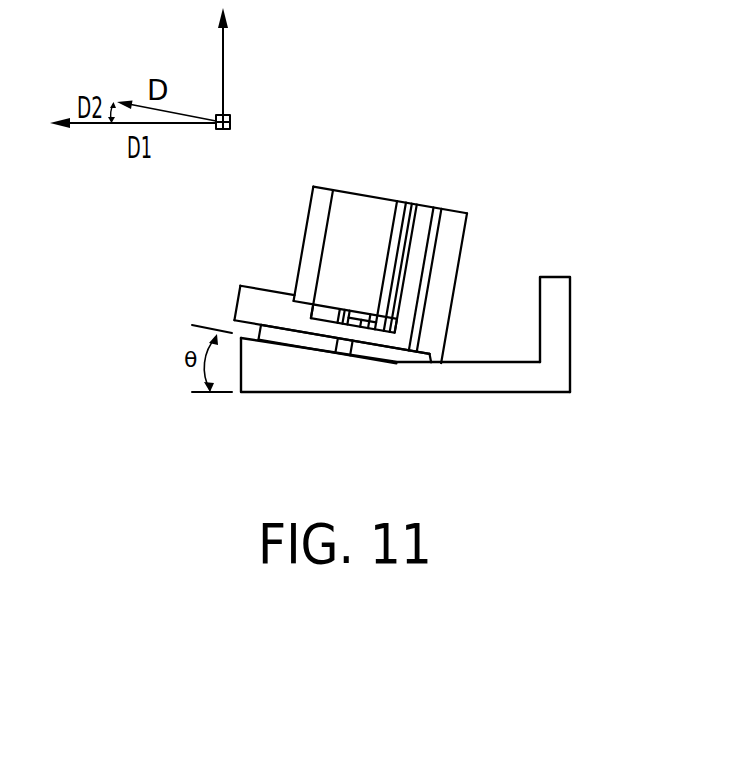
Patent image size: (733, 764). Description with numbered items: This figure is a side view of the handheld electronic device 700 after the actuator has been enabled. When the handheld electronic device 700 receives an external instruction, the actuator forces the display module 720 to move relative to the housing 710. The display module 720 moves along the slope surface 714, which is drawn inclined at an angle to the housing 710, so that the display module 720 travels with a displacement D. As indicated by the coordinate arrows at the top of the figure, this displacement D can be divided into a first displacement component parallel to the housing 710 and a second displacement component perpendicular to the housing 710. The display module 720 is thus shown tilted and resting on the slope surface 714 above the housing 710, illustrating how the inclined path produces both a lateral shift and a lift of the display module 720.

The handheld electronic device 700 is at (642, 443).
The housing 710 is at (555, 287).
The slope surface 714 is at (257, 334).
The display module 720 is at (273, 297).